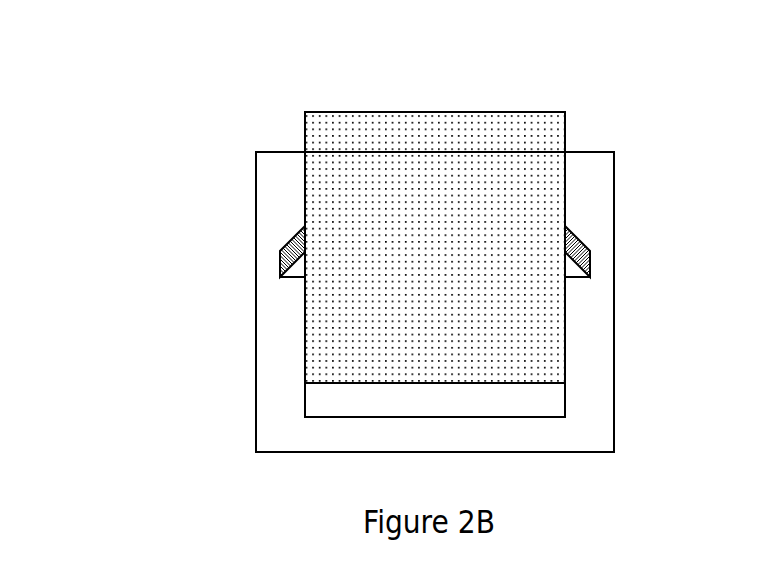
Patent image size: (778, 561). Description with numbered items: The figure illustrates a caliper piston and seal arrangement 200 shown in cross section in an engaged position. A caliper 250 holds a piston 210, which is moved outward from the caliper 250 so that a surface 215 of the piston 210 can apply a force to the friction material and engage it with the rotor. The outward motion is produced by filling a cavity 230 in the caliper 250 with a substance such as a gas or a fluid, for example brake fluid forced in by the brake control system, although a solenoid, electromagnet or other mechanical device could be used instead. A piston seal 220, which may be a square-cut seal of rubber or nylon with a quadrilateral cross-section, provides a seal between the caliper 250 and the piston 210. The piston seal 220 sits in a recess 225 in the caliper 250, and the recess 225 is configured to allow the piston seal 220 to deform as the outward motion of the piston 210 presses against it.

The assembly 200 is at (156, 91).
The piston 210 is at (320, 167).
The surface 215 is at (545, 103).
The piston seal 220 is at (280, 252).
The recess 225 is at (297, 278).
The cavity 230 is at (332, 407).
The caliper 250 is at (590, 417).